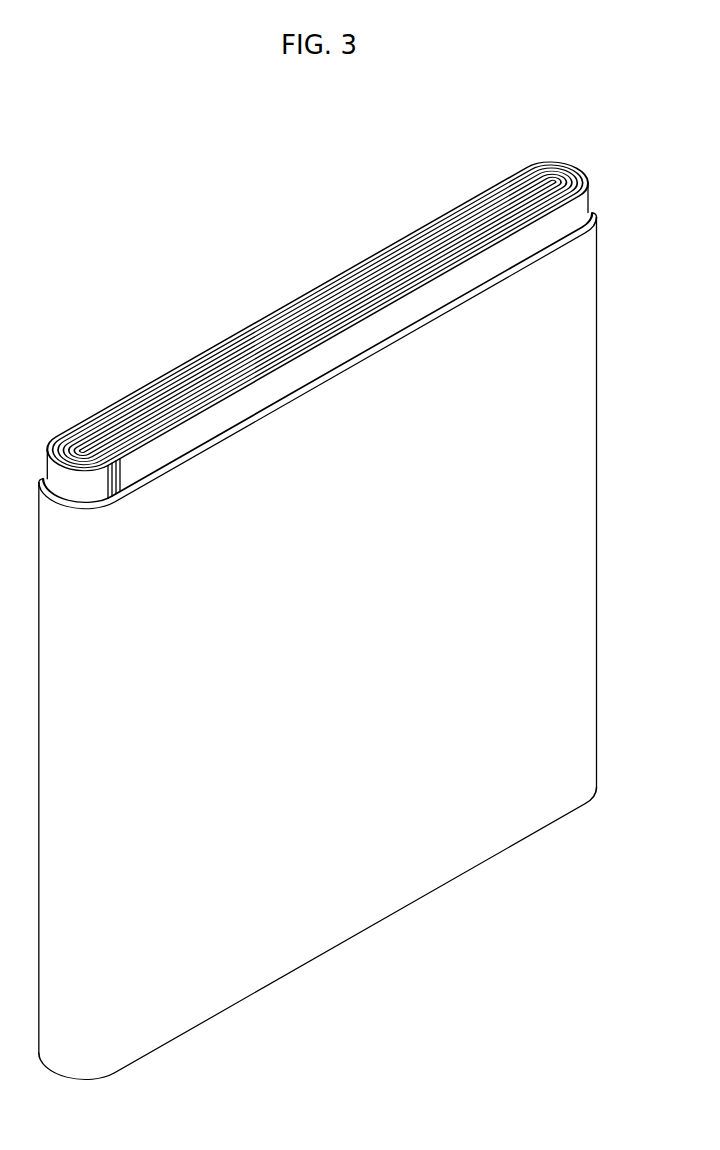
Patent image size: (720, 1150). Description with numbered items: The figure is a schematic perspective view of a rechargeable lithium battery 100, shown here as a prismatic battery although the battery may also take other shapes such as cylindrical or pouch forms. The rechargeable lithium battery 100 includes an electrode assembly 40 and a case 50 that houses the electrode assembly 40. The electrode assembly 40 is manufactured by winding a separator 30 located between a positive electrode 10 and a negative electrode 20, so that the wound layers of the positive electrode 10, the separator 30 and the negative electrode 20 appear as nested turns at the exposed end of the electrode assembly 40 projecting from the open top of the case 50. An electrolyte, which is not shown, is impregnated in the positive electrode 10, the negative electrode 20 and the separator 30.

The rechargeable lithium battery 100 is at (312, 114).
The positive electrode 10 is at (592, 184).
The negative electrode 20 is at (568, 176).
The separator 30 is at (581, 178).
The electrode assembly 40 is at (267, 279).
The case 50 is at (589, 486).